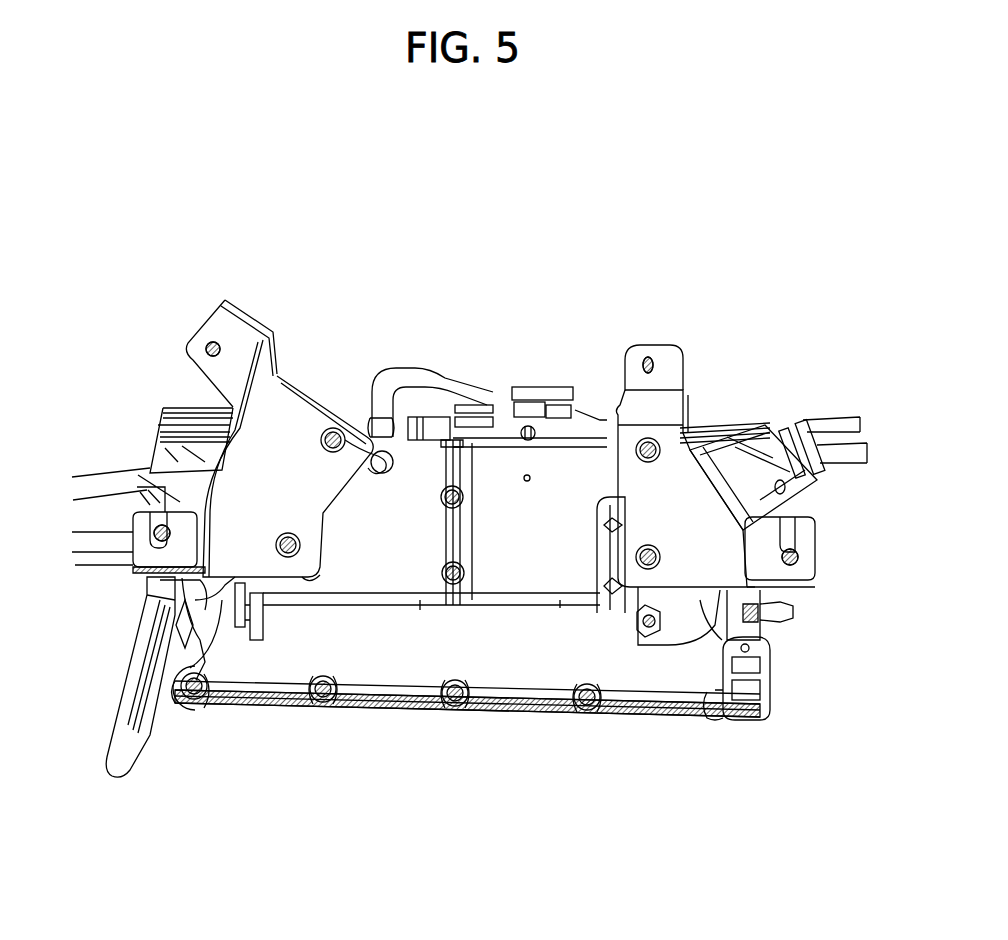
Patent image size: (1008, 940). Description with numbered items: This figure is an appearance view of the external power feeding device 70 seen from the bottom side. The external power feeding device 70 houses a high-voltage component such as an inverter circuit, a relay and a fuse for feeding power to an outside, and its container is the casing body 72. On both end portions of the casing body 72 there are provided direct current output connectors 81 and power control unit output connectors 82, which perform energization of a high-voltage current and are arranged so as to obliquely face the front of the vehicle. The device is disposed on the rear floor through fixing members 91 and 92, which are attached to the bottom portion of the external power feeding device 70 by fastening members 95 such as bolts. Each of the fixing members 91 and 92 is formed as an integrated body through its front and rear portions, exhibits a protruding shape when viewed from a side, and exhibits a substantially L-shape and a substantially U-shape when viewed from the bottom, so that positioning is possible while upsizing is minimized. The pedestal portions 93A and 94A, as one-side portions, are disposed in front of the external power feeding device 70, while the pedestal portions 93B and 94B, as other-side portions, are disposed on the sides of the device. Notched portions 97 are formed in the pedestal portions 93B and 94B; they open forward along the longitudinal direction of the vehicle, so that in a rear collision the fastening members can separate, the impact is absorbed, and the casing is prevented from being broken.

The external power feeding device 70 is at (283, 234).
The casing body 72 is at (517, 670).
The direct current output connectors 81 is at (803, 422).
The power control unit output connectors 82 is at (157, 425).
The fixing member 91 is at (694, 394).
The fixing member 92 is at (300, 370).
The pedestal portion 93A is at (625, 358).
The pedestal portion 93B is at (805, 573).
The pedestal portion 94A is at (215, 332).
The pedestal portion 94B is at (133, 560).
The fastening members 95 is at (340, 432).
The notched portions 97 is at (140, 507).